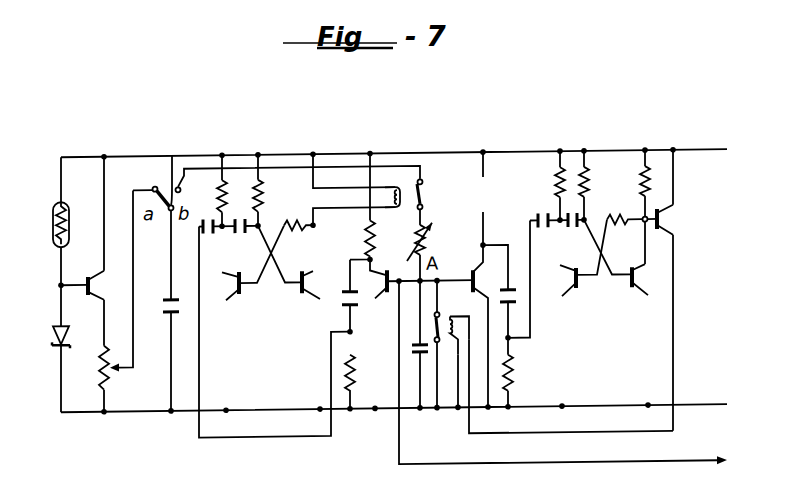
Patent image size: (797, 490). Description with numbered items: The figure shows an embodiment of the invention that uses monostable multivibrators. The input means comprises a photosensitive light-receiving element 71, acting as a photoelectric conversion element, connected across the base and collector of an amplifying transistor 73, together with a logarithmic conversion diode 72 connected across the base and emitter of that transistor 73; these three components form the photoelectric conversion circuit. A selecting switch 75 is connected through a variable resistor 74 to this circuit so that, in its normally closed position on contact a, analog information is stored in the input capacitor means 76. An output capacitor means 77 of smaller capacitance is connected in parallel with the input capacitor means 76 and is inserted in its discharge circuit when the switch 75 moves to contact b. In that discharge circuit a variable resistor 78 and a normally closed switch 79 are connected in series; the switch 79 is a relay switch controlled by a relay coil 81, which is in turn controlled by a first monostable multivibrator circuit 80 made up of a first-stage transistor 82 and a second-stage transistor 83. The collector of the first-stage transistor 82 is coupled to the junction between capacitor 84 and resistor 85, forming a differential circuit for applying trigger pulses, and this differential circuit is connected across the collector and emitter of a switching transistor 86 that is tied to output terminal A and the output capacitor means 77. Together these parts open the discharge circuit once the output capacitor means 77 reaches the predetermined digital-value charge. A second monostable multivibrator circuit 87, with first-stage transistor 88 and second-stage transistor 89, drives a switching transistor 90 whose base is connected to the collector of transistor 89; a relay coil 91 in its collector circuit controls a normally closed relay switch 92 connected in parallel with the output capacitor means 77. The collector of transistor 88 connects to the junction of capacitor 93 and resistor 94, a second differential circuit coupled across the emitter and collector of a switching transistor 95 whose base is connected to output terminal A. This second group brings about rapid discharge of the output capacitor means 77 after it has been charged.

The photosensitive light-receiving element 71 is at (56, 226).
The logarithmic conversion diode 72 is at (58, 349).
The amplifying transistor 73 is at (92, 287).
The variable resistor 74 is at (99, 367).
The selecting switch 75 is at (172, 158).
The input capacitor means 76 is at (165, 314).
The output capacitor means 77 is at (416, 356).
The variable resistor 78 is at (424, 256).
The normally closed switch 79 is at (424, 196).
The first monostable multivibrator circuit 80 is at (240, 183).
The relay coil 81 is at (393, 193).
The first-stage transistor 82 is at (231, 304).
The second-stage transistor 83 is at (312, 304).
The capacitor 84 is at (344, 299).
The resistor 85 is at (353, 371).
The switching transistor 86 is at (373, 245).
The second monostable multivibrator circuit 87 is at (620, 172).
The first-stage transistor 88 is at (573, 289).
The second-stage transistor 89 is at (630, 301).
The switching transistor 90 is at (665, 229).
The relay coil 91 is at (448, 330).
The normally closed relay switch 92 is at (441, 322).
The capacitor 93 is at (517, 304).
The resistor 94 is at (512, 384).
The switching transistor 95 is at (486, 252).